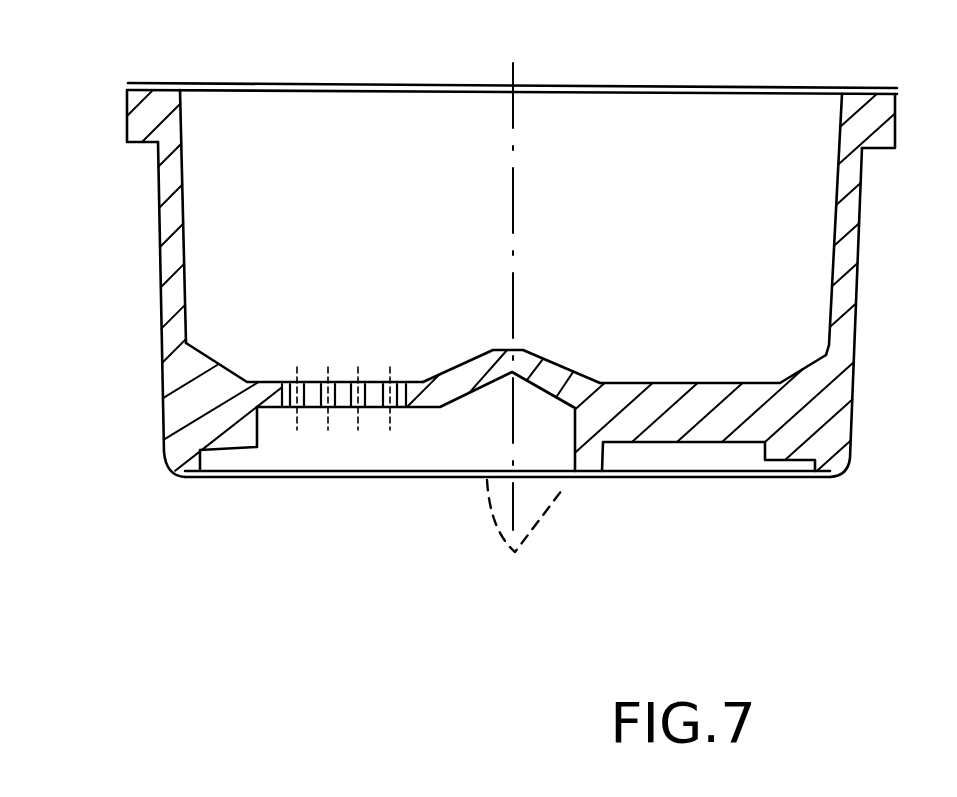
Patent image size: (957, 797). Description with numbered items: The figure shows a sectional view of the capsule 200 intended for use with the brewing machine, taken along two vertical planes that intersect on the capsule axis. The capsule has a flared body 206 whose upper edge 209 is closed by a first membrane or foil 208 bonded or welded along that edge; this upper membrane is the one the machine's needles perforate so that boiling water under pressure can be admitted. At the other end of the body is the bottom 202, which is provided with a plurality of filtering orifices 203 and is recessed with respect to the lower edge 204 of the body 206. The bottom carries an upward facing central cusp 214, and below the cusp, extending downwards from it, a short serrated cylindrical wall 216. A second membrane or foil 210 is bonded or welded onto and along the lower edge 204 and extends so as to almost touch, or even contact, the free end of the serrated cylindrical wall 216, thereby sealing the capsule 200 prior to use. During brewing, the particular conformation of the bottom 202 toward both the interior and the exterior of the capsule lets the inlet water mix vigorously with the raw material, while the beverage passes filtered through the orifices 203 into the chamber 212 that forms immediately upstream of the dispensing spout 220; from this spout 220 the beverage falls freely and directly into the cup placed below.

The capsule 200 is at (138, 357).
The bottom 202 is at (613, 383).
The filtering orifices 203 is at (388, 413).
The lower edge 204 is at (185, 465).
The flared body 206 is at (173, 250).
The first membrane or foil 208 is at (357, 83).
The upper edge 209 is at (145, 121).
The second membrane or foil 210 is at (747, 482).
The chamber 212 is at (458, 428).
The central cusp 214 is at (533, 352).
The serrated cylindrical wall 216 is at (585, 457).
The dispensing spout 220 is at (543, 518).